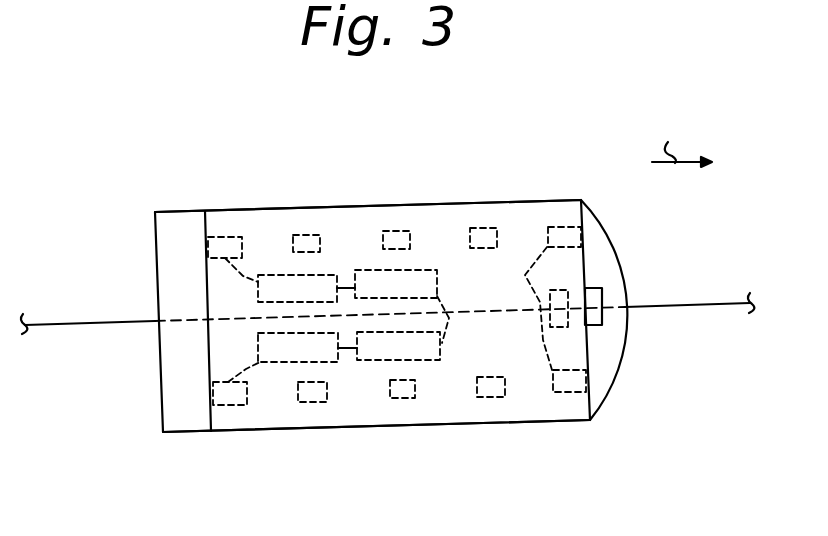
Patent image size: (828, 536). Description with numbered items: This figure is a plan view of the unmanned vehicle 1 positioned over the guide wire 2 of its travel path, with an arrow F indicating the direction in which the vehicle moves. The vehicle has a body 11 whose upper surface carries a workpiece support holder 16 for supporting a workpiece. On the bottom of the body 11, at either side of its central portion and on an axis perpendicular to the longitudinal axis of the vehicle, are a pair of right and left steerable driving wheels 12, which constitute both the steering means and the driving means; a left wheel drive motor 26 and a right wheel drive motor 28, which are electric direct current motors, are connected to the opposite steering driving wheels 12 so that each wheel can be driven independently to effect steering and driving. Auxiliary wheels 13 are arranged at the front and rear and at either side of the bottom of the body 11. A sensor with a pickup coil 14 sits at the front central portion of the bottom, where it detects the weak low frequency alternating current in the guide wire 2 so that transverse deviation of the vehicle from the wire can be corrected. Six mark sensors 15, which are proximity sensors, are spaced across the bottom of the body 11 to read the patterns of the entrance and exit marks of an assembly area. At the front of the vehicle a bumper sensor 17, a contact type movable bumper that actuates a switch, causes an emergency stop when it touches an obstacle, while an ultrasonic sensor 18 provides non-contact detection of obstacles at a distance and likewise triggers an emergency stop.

The unmanned vehicle 1 is at (524, 198).
The guide wire 2 is at (693, 304).
The body 11 is at (333, 207).
The steerable driving wheels 12 is at (446, 341).
The auxiliary wheels 13 is at (388, 314).
The pickup coil 14 is at (560, 290).
The mark sensors 15 is at (288, 235).
The workpiece support holder 16 is at (378, 421).
The bumper sensor 17 is at (605, 247).
The ultrasonic sensor 18 is at (602, 322).
The left wheel drive motor 26 is at (277, 276).
The right wheel drive motor 28 is at (278, 362).
The direction of travel F is at (682, 135).